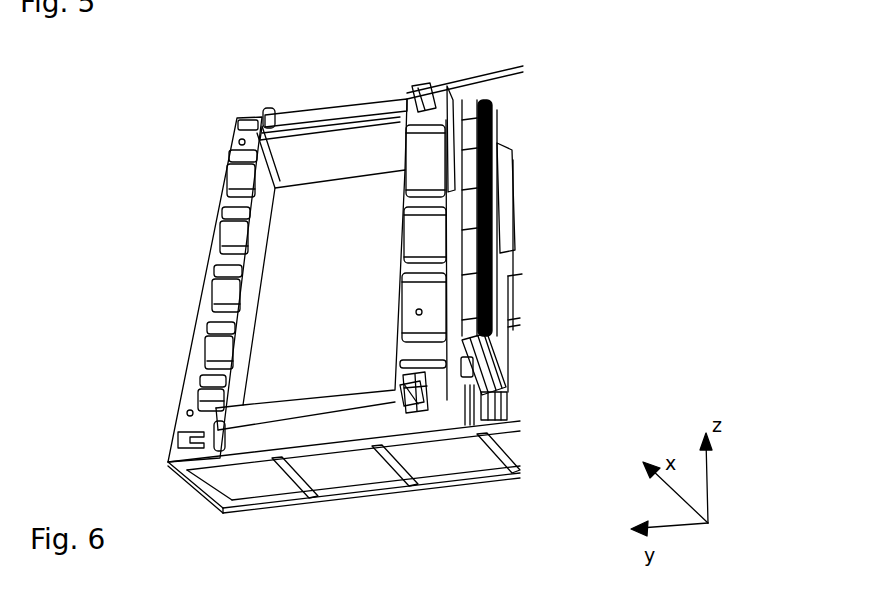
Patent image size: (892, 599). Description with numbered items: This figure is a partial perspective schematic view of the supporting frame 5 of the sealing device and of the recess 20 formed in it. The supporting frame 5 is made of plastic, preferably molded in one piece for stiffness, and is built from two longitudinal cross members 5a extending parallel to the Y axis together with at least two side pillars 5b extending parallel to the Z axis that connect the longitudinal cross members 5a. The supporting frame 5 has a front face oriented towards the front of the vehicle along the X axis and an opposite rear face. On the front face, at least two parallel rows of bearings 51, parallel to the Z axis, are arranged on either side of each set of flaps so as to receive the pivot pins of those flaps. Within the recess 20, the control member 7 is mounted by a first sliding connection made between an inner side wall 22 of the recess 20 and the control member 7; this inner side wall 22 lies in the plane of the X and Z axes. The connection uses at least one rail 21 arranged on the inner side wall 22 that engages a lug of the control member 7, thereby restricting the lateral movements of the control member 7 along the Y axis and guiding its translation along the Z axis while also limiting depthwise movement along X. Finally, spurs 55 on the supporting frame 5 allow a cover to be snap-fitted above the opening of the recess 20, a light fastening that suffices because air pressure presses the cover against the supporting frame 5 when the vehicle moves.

The supporting frame 5 is at (347, 80).
The longitudinal cross members 5a is at (297, 110).
The side pillars 5b is at (203, 243).
The control member 7 is at (522, 212).
The recess 20 is at (555, 278).
The rail 21 is at (493, 400).
The inner side wall 22 is at (457, 135).
The bearings 51 is at (198, 376).
The spurs 55 is at (420, 85).